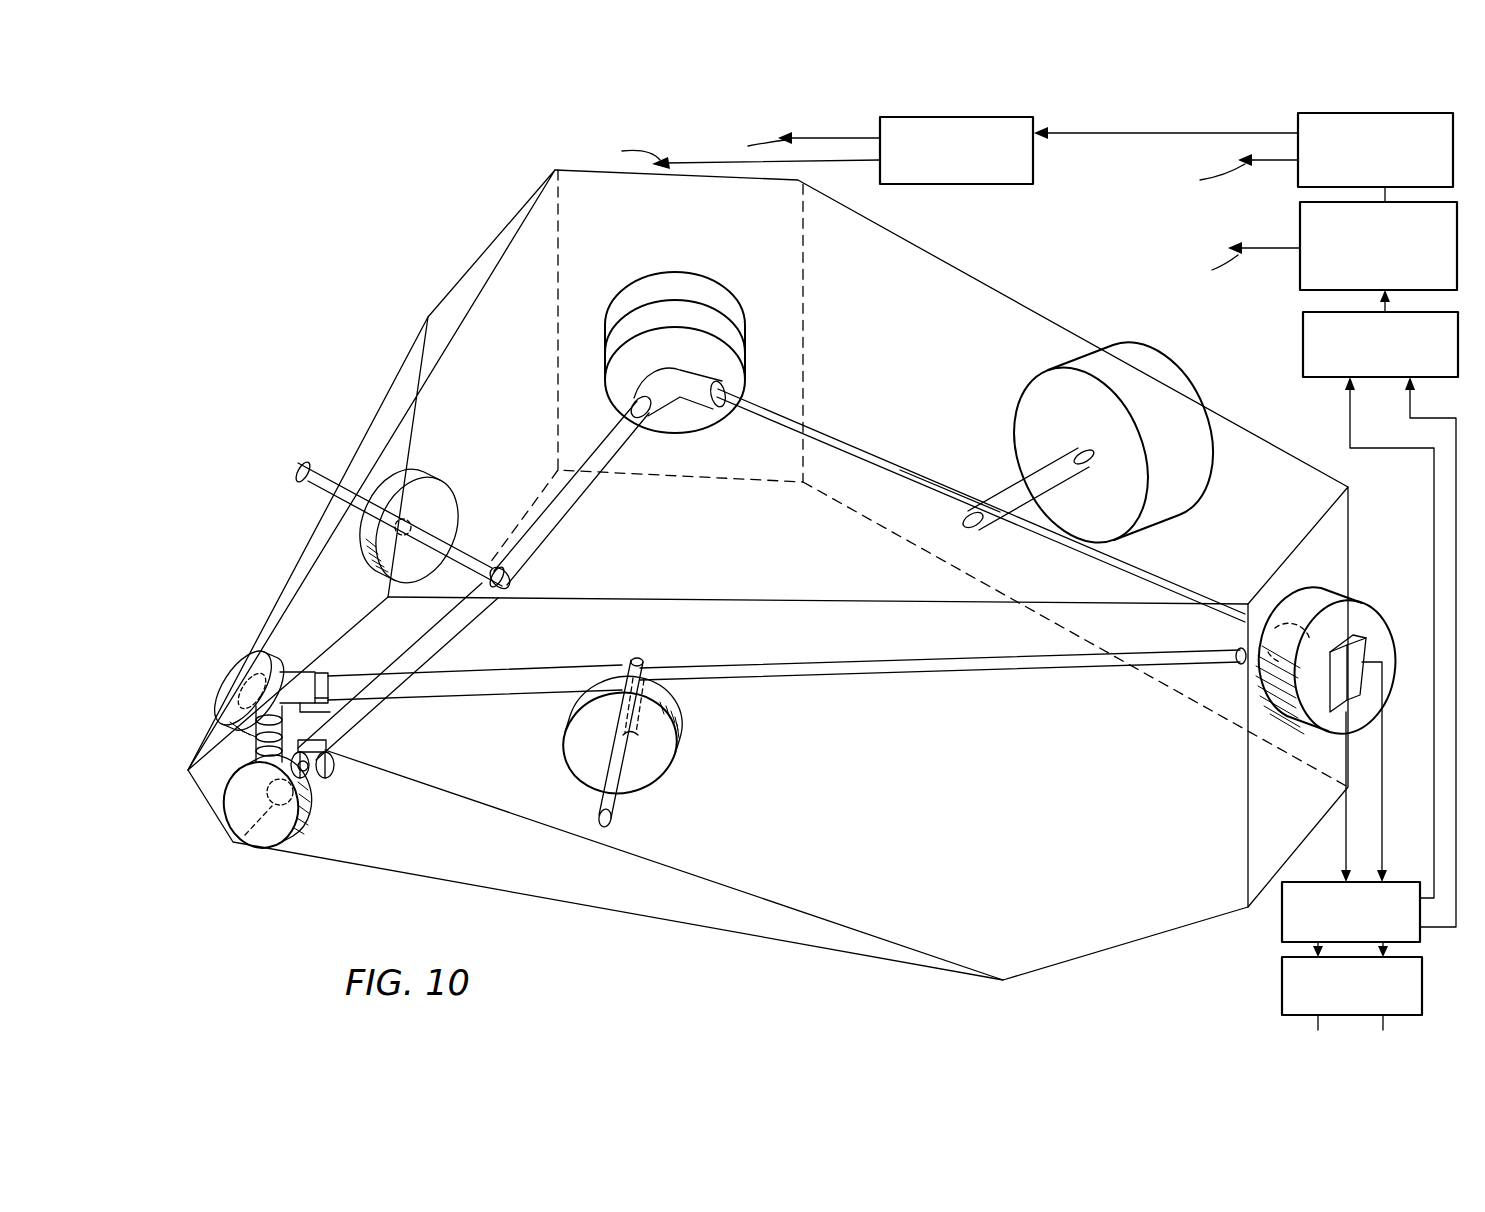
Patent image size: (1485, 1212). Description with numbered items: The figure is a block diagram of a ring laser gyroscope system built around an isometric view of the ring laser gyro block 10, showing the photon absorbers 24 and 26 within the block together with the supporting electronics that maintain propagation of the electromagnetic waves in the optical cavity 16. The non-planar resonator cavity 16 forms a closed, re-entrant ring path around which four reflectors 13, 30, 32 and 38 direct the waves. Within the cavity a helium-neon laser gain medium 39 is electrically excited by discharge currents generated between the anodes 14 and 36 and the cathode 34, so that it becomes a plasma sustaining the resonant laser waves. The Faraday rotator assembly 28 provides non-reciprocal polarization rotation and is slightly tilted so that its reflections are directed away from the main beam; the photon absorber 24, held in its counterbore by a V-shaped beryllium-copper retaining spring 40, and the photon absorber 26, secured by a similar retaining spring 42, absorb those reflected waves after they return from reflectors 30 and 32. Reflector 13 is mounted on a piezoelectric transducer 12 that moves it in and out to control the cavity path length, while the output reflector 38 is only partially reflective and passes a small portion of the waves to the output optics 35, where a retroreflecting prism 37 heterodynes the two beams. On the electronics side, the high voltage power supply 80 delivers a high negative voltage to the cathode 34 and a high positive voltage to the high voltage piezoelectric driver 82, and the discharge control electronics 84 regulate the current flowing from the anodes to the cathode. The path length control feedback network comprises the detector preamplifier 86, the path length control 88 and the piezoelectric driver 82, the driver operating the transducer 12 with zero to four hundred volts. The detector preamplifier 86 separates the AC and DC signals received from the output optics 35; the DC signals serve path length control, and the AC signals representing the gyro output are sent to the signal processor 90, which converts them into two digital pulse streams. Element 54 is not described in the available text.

The ring laser gyro block 10 is at (420, 247).
The piezoelectric element 12 is at (678, 286).
The reflector 13 is at (713, 320).
The anode 14 is at (358, 505).
The non-planar resonator cavity 16 is at (556, 502).
The photon absorber 24 is at (320, 673).
The photon absorber 26 is at (325, 770).
The Faraday rotator assembly 28 is at (238, 745).
The reflector 30 is at (250, 672).
The reflector 32 is at (278, 840).
The cathode 34 is at (1160, 375).
The output optics 35 is at (1397, 598).
The anode 36 is at (616, 800).
The retroreflecting prism 37 is at (1332, 682).
The output reflector 38 is at (1328, 596).
The laser gain medium 39 is at (898, 483).
The beryllium-copper retaining spring 40 is at (338, 713).
The beryllium-copper retaining spring 42 is at (330, 742).
The absorber ring 54 is at (318, 786).
The high voltage power supply 80 is at (1298, 185).
The high voltage piezoelectric driver 82 is at (1300, 273).
The discharge control electronics 84 is at (1012, 184).
The detector preamplifier 86 is at (1282, 925).
The path length control 88 is at (1303, 364).
The signal processor 90 is at (1282, 983).